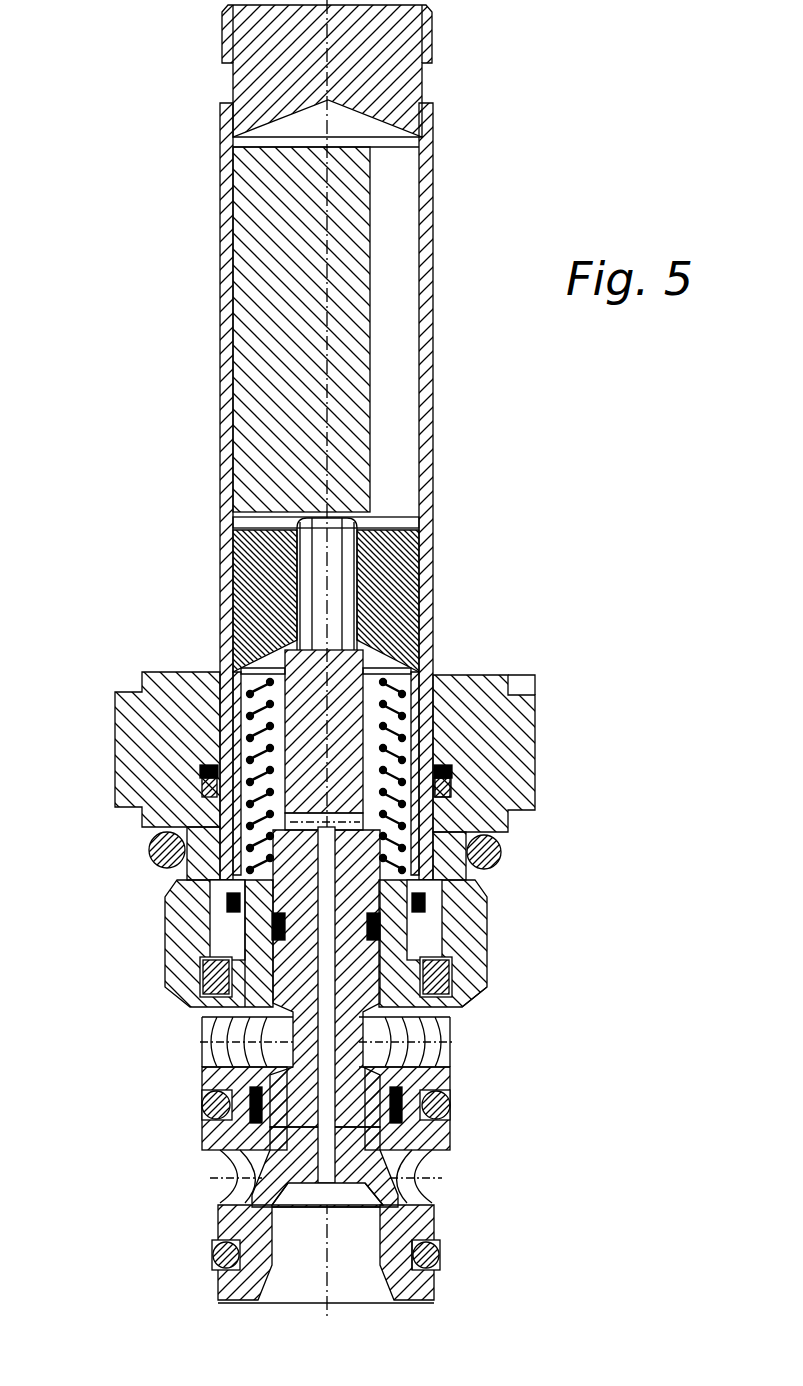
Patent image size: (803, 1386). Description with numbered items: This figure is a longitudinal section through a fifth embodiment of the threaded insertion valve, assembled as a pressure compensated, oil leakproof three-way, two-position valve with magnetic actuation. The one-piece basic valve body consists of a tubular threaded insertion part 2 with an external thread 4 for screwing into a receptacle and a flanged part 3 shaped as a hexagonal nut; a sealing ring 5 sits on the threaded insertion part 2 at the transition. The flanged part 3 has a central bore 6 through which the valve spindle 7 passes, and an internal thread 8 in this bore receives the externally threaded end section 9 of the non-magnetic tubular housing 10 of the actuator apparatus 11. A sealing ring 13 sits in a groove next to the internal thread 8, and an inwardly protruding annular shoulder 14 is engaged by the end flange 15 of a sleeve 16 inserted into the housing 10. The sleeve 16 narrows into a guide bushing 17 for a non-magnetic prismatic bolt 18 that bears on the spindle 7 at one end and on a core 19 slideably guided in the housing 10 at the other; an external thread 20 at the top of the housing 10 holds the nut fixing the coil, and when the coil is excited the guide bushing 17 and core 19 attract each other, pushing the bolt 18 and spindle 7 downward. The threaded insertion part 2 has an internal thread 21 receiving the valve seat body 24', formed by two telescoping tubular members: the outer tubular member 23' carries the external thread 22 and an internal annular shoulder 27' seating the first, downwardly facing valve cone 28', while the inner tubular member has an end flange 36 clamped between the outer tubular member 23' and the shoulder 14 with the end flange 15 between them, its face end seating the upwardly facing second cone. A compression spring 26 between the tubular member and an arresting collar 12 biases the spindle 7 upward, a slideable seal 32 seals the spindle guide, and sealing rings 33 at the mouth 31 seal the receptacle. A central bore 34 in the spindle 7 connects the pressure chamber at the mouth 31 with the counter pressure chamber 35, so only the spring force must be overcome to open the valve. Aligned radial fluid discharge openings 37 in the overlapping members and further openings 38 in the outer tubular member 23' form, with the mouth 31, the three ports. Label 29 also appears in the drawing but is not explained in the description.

The threaded insertion part 2 is at (475, 965).
The flanged part 3 is at (515, 755).
The external thread 4 is at (478, 1000).
The sealing ring 5 is at (502, 856).
The central bore 6 is at (445, 800).
The valve spindle 7 is at (470, 725).
The internal thread 8 is at (450, 680).
The externally threaded end section 9 is at (365, 695).
The tubular housing 10 is at (425, 238).
The actuator apparatus 11 is at (477, 504).
The arresting collar 12 is at (236, 662).
The sealing ring 13 is at (210, 786).
The annular shoulder 14 is at (215, 820).
The end flange 15 is at (190, 875).
The sleeve 16 is at (220, 712).
The guide bushing 17 is at (400, 600).
The prismatic bolt 18 is at (360, 518).
The core 19 is at (255, 320).
The external thread 20 is at (423, 38).
The internal thread 21 is at (230, 926).
The external thread 22 is at (215, 948).
The outer tubular member 23' is at (168, 995).
The valve seat body 24' is at (277, 1108).
The compression spring 26 is at (210, 770).
The internal annular shoulder 27' is at (475, 1241).
The first valve cone 28' is at (443, 1195).
The neck 29 is at (425, 1172).
The mouth 31 is at (225, 1290).
The slideable seal 32 is at (450, 925).
The sealing rings 33 is at (440, 1260).
The central bore 34 is at (240, 1240).
The counter pressure chamber 35 is at (222, 620).
The end flange 36 is at (470, 878).
The radial fluid discharge openings 37 is at (218, 1055).
The further radial fluid discharge openings 38 is at (240, 1176).